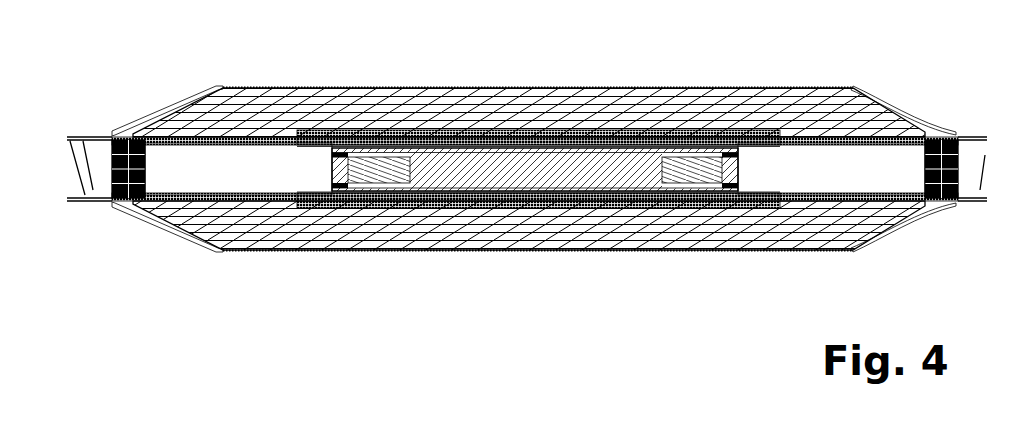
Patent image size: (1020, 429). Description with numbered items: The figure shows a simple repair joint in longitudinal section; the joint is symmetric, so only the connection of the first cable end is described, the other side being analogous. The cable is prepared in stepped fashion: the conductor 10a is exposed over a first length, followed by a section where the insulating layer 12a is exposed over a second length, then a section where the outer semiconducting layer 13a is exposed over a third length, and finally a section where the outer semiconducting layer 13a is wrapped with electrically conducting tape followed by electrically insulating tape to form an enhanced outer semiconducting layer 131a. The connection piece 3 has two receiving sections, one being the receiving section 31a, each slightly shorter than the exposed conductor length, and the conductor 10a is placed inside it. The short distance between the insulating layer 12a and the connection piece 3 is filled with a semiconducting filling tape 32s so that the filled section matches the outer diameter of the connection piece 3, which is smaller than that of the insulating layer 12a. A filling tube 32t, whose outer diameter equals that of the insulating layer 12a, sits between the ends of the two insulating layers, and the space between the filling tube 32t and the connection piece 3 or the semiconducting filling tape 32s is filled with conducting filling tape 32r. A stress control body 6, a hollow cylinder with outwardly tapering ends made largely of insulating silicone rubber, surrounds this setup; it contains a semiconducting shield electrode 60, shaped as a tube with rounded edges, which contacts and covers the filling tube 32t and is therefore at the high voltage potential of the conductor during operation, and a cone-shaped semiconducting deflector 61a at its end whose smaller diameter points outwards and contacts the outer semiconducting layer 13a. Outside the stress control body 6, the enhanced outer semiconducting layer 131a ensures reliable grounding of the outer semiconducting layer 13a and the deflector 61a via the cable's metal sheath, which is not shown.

The connection piece 3 is at (503, 183).
The stress control body 6 is at (577, 101).
The conductor 10a is at (403, 175).
The insulating layer 12a is at (277, 182).
The outer semiconducting layer 13a is at (123, 199).
The receiving section 31a is at (380, 187).
The conducting filling tape 32r is at (500, 148).
The semiconducting filling tape 32s is at (342, 147).
The filling tube 32t is at (567, 143).
The shield electrode 60 is at (323, 136).
The deflector 61a is at (178, 134).
The enhanced outer semiconducting layer 131a is at (73, 190).